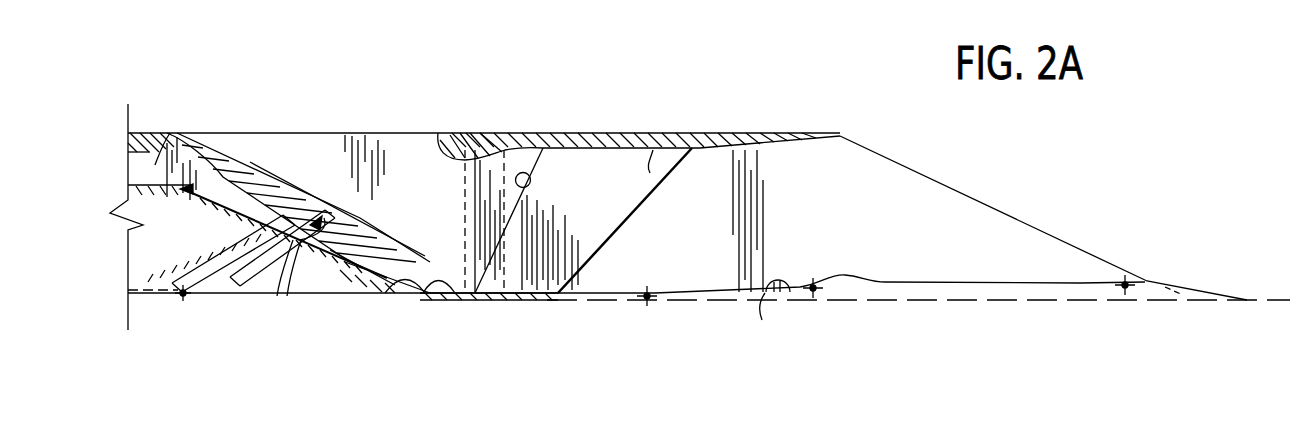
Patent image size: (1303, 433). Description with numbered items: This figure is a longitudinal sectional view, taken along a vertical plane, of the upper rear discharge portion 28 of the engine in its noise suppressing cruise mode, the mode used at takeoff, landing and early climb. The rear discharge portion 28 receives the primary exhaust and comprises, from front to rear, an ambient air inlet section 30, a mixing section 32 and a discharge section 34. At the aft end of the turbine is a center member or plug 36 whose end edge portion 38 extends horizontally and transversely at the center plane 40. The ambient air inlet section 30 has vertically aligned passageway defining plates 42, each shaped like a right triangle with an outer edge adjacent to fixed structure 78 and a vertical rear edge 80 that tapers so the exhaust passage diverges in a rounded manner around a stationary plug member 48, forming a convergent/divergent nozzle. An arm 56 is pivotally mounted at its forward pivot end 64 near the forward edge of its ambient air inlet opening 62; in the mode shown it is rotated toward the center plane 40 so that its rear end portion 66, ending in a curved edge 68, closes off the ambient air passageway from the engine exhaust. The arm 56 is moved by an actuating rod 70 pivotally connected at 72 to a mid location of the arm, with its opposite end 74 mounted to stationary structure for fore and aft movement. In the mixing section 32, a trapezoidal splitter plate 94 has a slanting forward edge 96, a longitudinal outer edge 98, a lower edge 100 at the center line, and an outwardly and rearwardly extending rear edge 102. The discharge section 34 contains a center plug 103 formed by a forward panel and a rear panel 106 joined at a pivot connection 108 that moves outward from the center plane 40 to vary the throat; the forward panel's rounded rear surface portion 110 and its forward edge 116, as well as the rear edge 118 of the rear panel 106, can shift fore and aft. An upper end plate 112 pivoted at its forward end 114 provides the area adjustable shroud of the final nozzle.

The rear discharge portion 28 is at (608, 86).
The ambient air inlet section 30 is at (400, 118).
The mixing section 32 is at (619, 133).
The discharge section 34 is at (832, 130).
The center member or plug 36 is at (168, 135).
The end edge portion 38 is at (387, 300).
The center plane 40 is at (247, 300).
The passageway defining plates 42 is at (367, 155).
The plug member 48 is at (512, 148).
The arm 56 is at (250, 158).
The ambient air inlet opening 62 is at (282, 147).
The forward pivot end 64 is at (187, 132).
The rear end portion 66 is at (367, 282).
The edge 68 is at (448, 295).
The actuating rod 70 is at (243, 282).
The pivotal connection 72 is at (277, 293).
The rod end 74 is at (183, 295).
The fixed structure 78 is at (377, 155).
The vertical rear edge 80 is at (497, 145).
The splitter plate 94 is at (653, 150).
The forward edge 96 is at (527, 195).
The outer edge 98 is at (638, 133).
The lower edge 100 is at (543, 297).
The rear edge 102 is at (622, 232).
The center plug 103 is at (800, 276).
The rear panel 106 is at (893, 282).
The pivot connection 108 is at (813, 288).
The rear surface portion 110 is at (768, 292).
The end plate 112 is at (738, 132).
The forward end 114 is at (440, 140).
The forward edge 116 is at (647, 298).
The rear edge 118 is at (1247, 300).